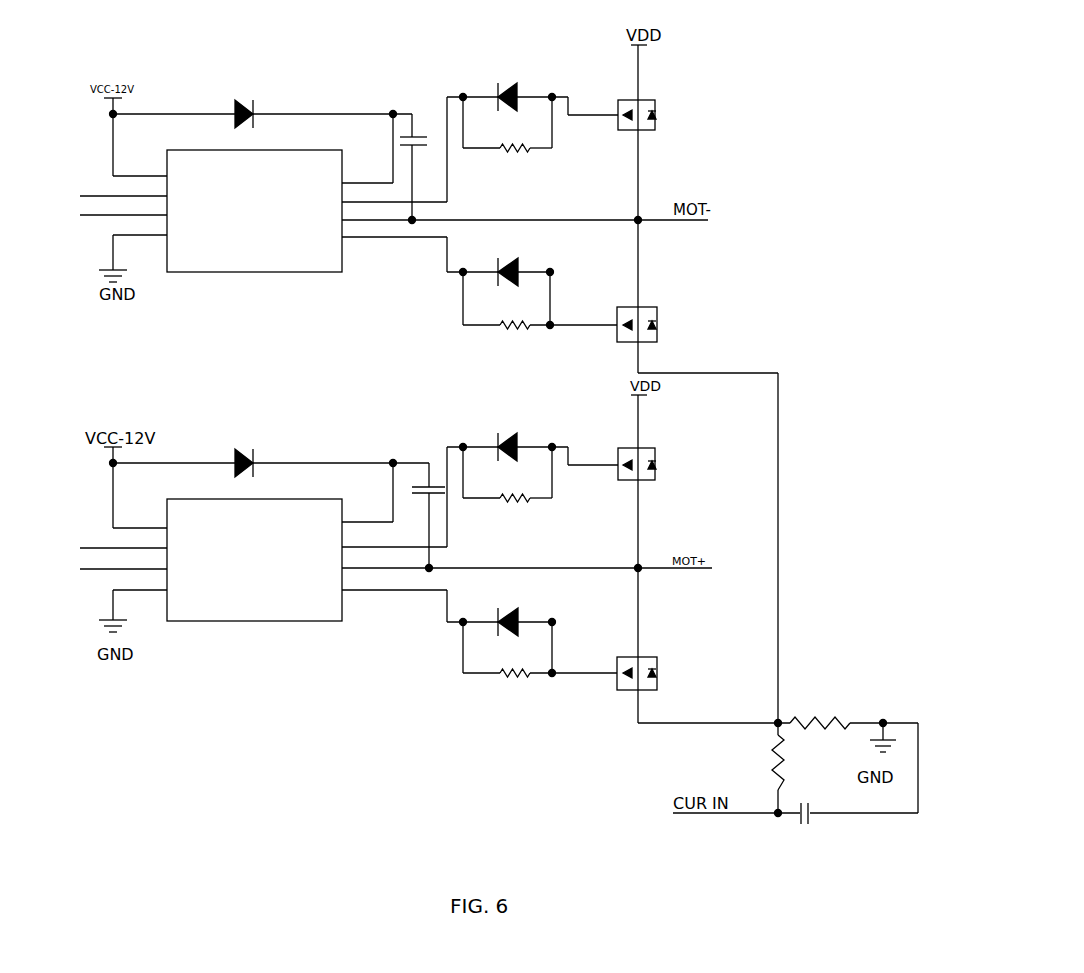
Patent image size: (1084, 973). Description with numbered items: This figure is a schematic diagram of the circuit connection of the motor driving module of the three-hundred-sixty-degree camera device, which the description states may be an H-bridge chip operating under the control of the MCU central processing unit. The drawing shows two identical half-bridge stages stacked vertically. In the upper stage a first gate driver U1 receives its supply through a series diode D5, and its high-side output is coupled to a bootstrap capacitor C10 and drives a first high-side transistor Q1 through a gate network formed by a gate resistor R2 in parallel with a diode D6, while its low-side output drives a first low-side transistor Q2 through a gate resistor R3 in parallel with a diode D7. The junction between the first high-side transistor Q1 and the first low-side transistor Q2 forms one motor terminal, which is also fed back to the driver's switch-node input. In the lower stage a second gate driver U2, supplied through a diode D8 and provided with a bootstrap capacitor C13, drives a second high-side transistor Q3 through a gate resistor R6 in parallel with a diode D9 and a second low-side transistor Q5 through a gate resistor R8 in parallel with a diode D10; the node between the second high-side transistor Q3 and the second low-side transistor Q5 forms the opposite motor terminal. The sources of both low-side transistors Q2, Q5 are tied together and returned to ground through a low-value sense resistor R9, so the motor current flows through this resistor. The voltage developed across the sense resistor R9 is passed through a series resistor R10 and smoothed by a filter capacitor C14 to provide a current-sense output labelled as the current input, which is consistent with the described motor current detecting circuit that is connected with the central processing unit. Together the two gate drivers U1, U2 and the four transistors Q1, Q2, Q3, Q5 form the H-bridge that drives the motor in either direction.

The gate driver EG2132 (upper) U1 is at (220, 219).
The gate driver EG2132 (lower) U2 is at (220, 568).
The diode D5 is at (244, 121).
The diode D6 is at (508, 87).
The diode D7 is at (508, 270).
The diode D8 is at (244, 470).
The diode D9 is at (508, 460).
The diode D10 is at (508, 632).
The gate resistor 100R R2 is at (507, 136).
The gate resistor 100R R3 is at (540, 314).
The gate resistor 100R R6 is at (507, 490).
The gate resistor 100R R8 is at (540, 663).
The current sense resistor 10mR R9 is at (854, 731).
The resistor 1K R10 is at (760, 768).
The bootstrap capacitor C10 is at (416, 169).
The bootstrap capacitor C13 is at (422, 517).
The filter capacitor 1NF C14 is at (802, 817).
The NMOS transistor Q1 is at (673, 112).
The NMOS transistor Q2 is at (673, 319).
The NMOS transistor Q3 is at (673, 463).
The NMOS transistor Q5 is at (673, 669).